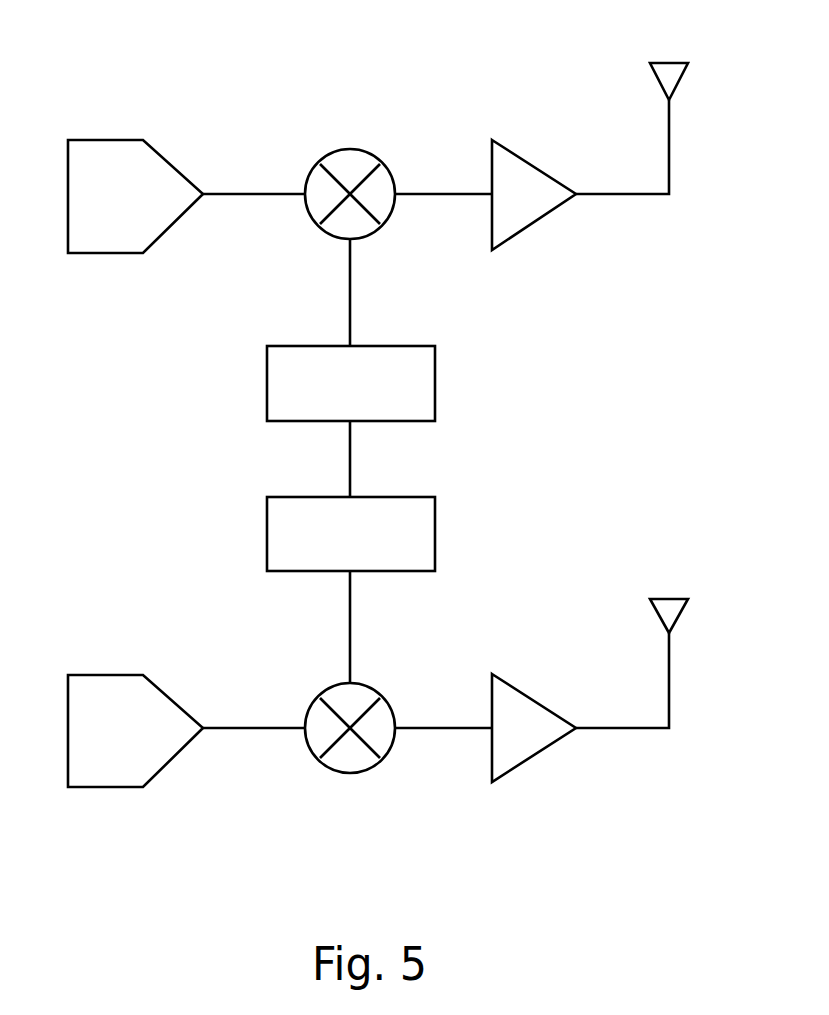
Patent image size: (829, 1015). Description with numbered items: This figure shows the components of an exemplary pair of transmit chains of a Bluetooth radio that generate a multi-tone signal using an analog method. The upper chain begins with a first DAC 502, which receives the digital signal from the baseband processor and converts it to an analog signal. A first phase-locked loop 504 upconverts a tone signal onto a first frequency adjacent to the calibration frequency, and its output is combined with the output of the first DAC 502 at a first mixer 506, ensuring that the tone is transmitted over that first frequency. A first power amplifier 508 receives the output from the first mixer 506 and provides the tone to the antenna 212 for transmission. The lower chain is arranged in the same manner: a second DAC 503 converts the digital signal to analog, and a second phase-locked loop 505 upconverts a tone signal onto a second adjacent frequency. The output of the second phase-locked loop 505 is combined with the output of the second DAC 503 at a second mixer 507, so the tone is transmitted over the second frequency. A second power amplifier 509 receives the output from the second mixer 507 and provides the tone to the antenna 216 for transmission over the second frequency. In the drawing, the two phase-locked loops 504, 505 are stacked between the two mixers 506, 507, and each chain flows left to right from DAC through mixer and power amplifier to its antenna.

The first DAC 502 is at (135, 196).
The second DAC 503 is at (135, 731).
The first phase-locked loop 504 is at (351, 383).
The second phase-locked loop 505 is at (351, 534).
The first mixer 506 is at (392, 173).
The second mixer 507 is at (363, 773).
The first power amplifier 508 is at (534, 195).
The second power amplifier 509 is at (534, 728).
The antenna 212 is at (687, 73).
The antenna 216 is at (687, 602).